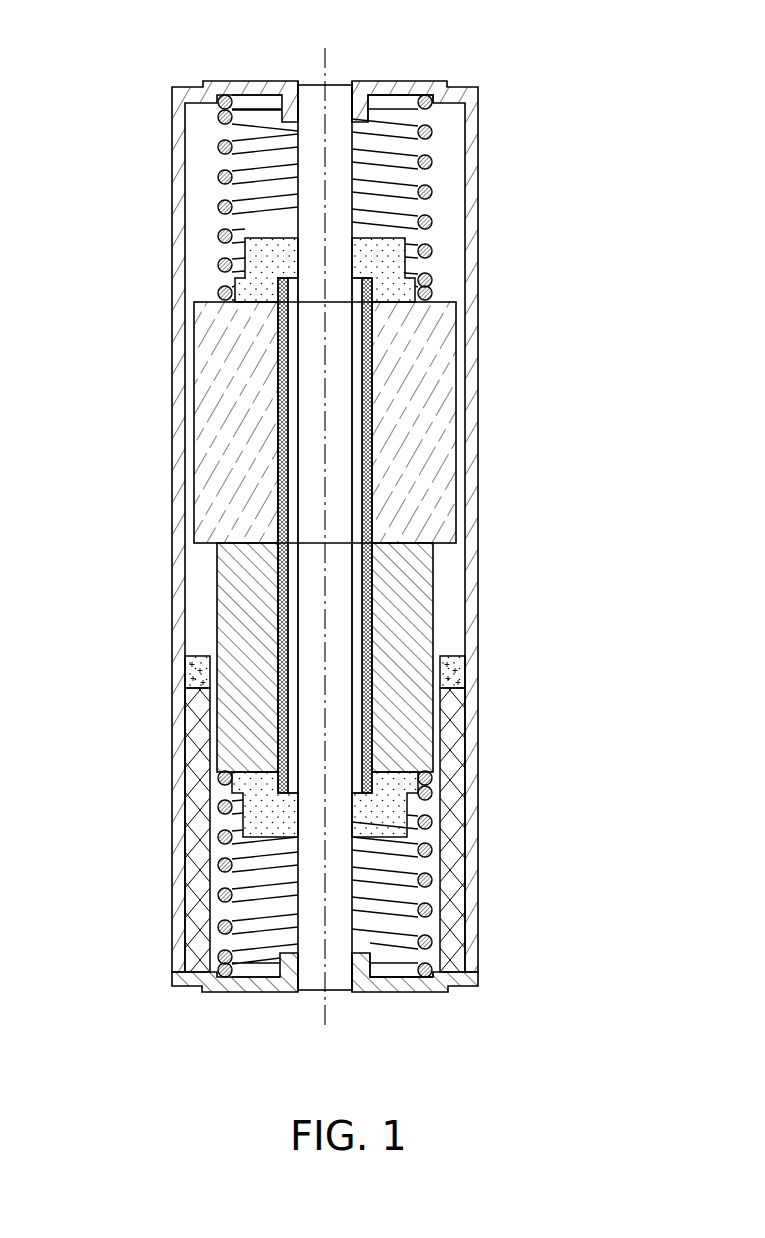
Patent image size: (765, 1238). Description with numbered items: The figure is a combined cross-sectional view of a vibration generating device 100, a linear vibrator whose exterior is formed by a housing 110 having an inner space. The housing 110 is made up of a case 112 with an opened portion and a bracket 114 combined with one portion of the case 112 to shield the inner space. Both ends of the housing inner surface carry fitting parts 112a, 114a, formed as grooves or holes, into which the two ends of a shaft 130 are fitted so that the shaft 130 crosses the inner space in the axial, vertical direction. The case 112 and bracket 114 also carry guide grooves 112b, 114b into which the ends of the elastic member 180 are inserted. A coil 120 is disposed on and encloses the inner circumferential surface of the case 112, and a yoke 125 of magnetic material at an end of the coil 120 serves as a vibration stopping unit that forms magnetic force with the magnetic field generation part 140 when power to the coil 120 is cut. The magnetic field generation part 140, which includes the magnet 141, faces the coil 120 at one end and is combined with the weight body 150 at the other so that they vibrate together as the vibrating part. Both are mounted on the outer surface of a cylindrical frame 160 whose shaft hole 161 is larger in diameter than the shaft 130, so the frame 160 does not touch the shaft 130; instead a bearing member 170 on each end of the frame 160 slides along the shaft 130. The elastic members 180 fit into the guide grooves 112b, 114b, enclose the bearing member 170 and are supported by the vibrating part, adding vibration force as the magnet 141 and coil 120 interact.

The vibration generating device 100 is at (113, 64).
The housing 110 is at (558, 933).
The case 112 is at (473, 940).
The fitting part 112a is at (352, 100).
The guide groove 112b is at (424, 96).
The bracket 114 is at (473, 978).
The fitting part 114a is at (353, 973).
The guide groove 114b is at (433, 980).
The coil 120 is at (457, 813).
The yoke 125 is at (460, 672).
The shaft 130 is at (343, 143).
The magnetic field generation part 140 is at (415, 572).
The magnet 141 is at (325, 657).
The weight body 150 is at (433, 437).
The frame 160 is at (372, 330).
The shaft hole 161 is at (370, 360).
The bearing member 170 is at (395, 257).
The elastic member 180 is at (432, 219).